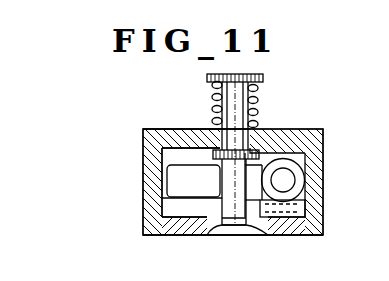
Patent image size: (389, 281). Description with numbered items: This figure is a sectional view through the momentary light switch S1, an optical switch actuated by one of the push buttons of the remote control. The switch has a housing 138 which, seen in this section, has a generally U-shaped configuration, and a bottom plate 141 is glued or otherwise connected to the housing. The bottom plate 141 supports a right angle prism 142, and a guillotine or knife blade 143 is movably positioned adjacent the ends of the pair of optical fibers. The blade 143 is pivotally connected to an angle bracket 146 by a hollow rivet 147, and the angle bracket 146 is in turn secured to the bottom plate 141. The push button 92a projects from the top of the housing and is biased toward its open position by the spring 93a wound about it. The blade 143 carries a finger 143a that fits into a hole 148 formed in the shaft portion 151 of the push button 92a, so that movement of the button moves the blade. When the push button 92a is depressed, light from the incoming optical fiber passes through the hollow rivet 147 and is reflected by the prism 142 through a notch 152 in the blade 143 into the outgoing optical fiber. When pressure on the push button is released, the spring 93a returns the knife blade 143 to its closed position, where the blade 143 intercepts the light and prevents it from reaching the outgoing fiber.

The momentary light switch S1 is at (80, 152).
The push button 92a is at (263, 77).
The spring 93a is at (258, 95).
The housing 138 is at (145, 131).
The bottom plate 141 is at (186, 236).
The right angle prism 142 is at (163, 156).
The guillotine or knife blade 143 is at (167, 176).
The finger 143a is at (222, 228).
The angle bracket 146 is at (298, 210).
The hollow rivet 147 is at (296, 181).
The hole 148 is at (223, 181).
The shaft portion 151 is at (262, 228).
The notch 152 is at (191, 140).